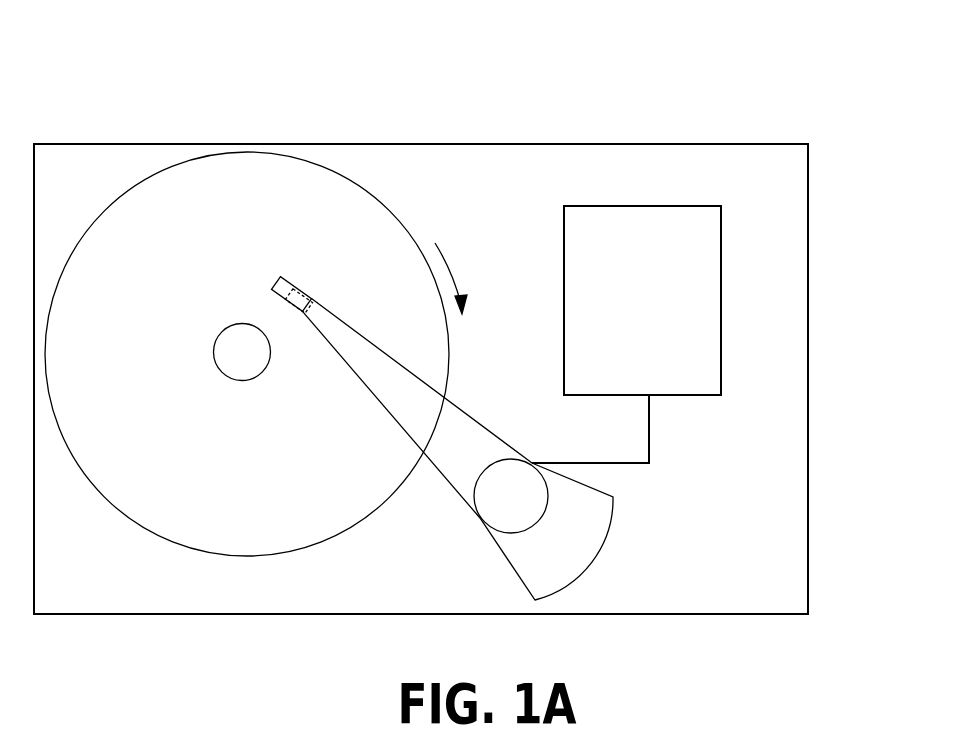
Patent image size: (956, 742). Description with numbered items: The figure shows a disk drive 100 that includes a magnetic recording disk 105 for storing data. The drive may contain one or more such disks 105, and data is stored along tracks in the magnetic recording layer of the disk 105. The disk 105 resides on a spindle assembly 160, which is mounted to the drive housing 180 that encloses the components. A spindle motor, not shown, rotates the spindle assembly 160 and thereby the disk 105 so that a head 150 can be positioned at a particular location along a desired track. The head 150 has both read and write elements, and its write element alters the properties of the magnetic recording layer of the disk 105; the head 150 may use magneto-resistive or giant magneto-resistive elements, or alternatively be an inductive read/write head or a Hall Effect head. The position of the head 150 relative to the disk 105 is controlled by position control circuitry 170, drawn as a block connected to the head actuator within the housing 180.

The disk drive 100 is at (775, 75).
The disk 105 is at (148, 531).
The head 150 is at (295, 287).
The spindle assembly 160 is at (258, 362).
The position control circuitry 170 is at (652, 339).
The drive housing 180 is at (502, 144).